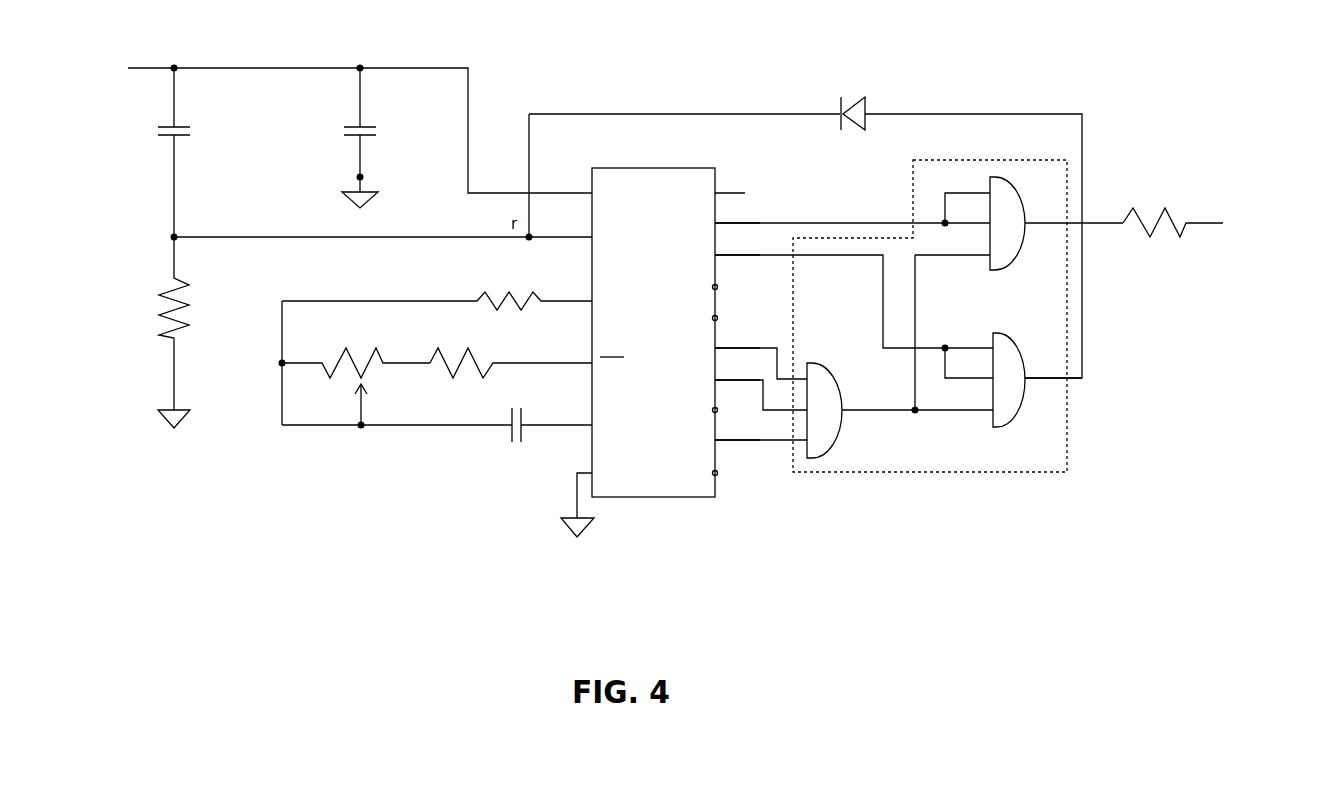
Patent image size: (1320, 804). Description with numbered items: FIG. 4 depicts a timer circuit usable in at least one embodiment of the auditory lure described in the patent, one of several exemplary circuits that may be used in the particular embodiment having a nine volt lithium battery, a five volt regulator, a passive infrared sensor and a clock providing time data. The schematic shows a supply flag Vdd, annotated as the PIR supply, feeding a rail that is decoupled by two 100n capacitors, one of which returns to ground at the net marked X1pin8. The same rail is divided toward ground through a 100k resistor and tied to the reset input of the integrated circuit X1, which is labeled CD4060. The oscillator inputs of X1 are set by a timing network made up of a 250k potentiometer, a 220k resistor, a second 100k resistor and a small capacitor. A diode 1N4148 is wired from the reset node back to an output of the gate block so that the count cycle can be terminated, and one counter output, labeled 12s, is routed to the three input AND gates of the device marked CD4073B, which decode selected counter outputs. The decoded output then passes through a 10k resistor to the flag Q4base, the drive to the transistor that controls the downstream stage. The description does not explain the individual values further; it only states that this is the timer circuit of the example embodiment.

The Vdd supply flag (PIR +V) Vdd is at (63, 55).
The 100 nF decoupling capacitors 100n is at (262, 152).
The X1 pin 8 ground net X1pin8 is at (360, 177).
The 100 kOhm resistors 100k is at (348, 332).
The 250 kOhm potentiometer 250k is at (355, 352).
The 220 kOhm resistor 220k is at (511, 375).
The counter IC X1 is at (660, 340).
The CD4060 oscillator/counter IC CD4060 is at (660, 352).
The 1N4148 diode 1N4148 is at (805, 237).
The 12 second net 12s is at (852, 211).
The CD4073B triple 3-input AND gate CD4073B is at (919, 316).
The 10 kOhm base resistor 10k is at (1173, 234).
The Q4 base output flag Q4base is at (1223, 208).